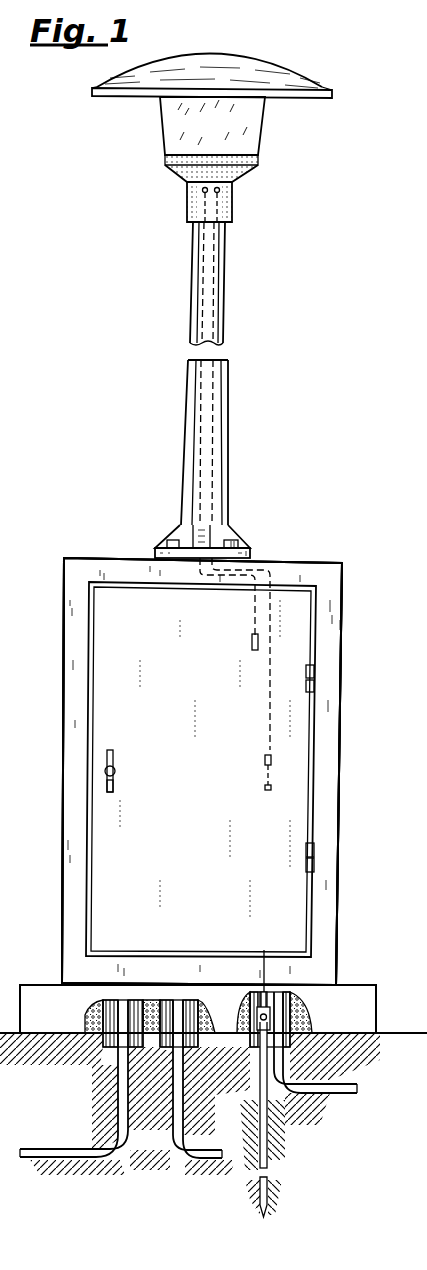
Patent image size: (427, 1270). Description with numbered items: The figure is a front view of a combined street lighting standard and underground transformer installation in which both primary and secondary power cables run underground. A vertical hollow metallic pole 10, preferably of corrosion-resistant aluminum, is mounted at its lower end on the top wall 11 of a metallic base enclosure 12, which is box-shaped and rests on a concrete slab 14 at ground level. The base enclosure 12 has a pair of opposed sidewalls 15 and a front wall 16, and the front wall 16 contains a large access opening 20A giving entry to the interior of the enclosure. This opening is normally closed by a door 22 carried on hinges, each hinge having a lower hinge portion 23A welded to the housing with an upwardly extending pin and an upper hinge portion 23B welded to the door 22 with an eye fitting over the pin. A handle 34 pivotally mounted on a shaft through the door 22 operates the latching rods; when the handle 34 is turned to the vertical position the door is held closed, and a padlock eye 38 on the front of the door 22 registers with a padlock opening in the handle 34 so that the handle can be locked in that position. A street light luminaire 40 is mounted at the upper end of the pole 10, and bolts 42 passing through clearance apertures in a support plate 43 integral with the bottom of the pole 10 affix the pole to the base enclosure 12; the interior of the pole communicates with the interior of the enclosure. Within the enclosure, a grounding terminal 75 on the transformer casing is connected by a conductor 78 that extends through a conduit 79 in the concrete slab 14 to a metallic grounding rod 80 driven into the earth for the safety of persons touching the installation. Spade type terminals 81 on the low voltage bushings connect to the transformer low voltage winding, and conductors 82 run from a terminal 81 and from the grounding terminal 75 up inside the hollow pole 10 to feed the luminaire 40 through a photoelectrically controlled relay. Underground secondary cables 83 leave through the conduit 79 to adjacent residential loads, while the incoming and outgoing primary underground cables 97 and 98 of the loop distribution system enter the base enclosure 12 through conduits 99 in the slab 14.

The vertical hollow metallic pole 10 is at (188, 402).
The top wall 11 is at (88, 557).
The base enclosure 12 is at (62, 702).
The concrete slab 14 is at (27, 982).
The sidewalls 15 is at (62, 734).
The front wall 16 is at (327, 618).
The access opening 20A is at (107, 856).
The door 22 is at (222, 758).
The lower hinge portion 23A is at (316, 688).
The upper hinge portion 23B is at (316, 672).
The handle 34 is at (114, 756).
The padlock eye 38 is at (106, 786).
The street light luminaire 40 is at (175, 138).
The bolts 42 is at (235, 540).
The support plate 43 is at (255, 556).
The grounding terminal 75 is at (262, 772).
The conductor 78 is at (264, 950).
The conduit 79 is at (256, 1047).
The metallic grounding rod 80 is at (259, 1113).
The spade type terminals 81 is at (250, 634).
The conductors 82 is at (262, 445).
The underground secondary cables 83 is at (285, 1094).
The incoming primary underground cable 97 is at (118, 1103).
The outgoing primary underground cable 98 is at (172, 1120).
The conduits 99 is at (101, 1050).